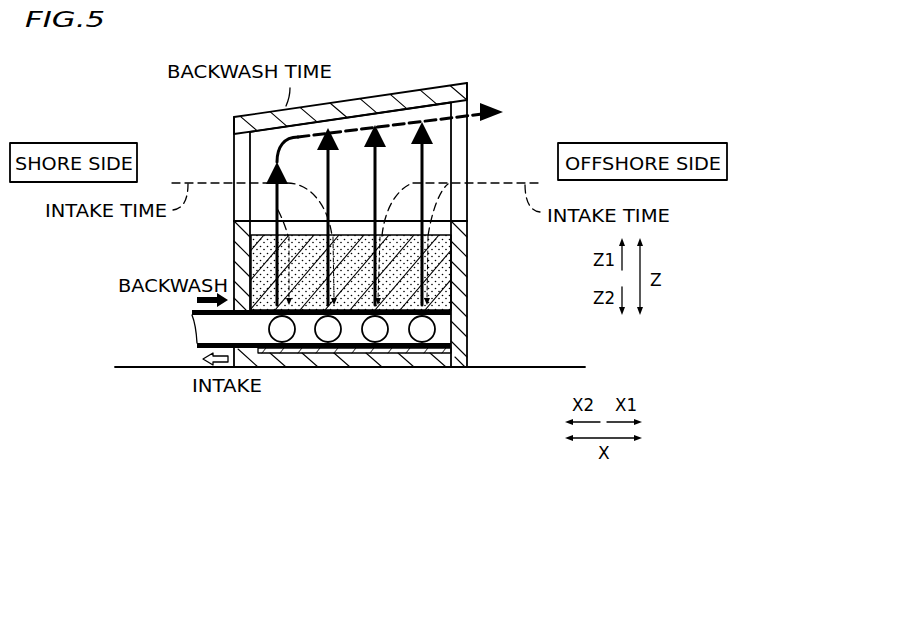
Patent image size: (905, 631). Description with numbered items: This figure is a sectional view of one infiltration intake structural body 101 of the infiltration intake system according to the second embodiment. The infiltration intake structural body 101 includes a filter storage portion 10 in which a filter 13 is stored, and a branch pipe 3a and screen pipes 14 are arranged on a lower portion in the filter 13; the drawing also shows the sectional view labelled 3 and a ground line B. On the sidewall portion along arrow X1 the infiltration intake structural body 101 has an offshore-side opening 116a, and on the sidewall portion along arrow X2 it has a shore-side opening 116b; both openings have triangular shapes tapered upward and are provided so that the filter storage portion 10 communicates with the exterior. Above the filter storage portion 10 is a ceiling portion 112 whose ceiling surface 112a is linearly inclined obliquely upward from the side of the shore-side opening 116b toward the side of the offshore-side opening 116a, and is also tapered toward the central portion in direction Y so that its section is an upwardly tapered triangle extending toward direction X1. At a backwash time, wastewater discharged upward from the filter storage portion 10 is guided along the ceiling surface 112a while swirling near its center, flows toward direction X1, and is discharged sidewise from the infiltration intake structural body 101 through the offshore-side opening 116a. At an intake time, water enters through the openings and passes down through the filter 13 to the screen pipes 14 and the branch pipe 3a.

The infiltration intake structural body 101 is at (522, 113).
The filter storage portion 10 is at (464, 273).
The ceiling portion 112 is at (350, 112).
The ceiling surface 112a is at (378, 118).
The offshore-side opening 116a is at (462, 223).
The shore-side opening 116b is at (234, 222).
The filter 13 is at (358, 236).
The branch pipe 3a is at (453, 312).
The screen unit 3 is at (359, 307).
The screen pipes 14 is at (284, 353).
The seabed B is at (148, 366).